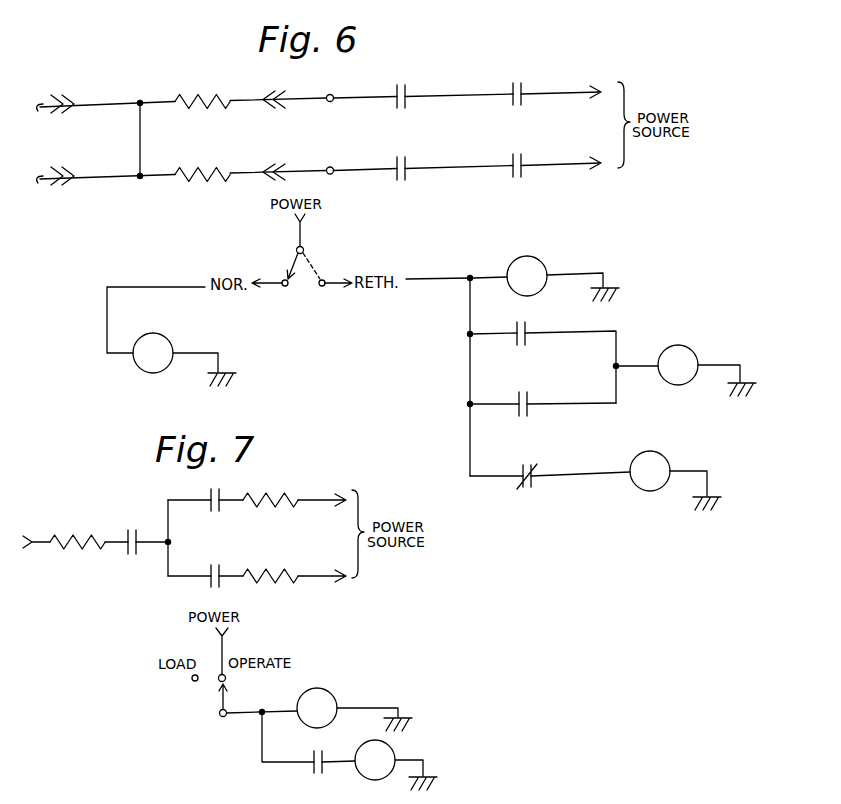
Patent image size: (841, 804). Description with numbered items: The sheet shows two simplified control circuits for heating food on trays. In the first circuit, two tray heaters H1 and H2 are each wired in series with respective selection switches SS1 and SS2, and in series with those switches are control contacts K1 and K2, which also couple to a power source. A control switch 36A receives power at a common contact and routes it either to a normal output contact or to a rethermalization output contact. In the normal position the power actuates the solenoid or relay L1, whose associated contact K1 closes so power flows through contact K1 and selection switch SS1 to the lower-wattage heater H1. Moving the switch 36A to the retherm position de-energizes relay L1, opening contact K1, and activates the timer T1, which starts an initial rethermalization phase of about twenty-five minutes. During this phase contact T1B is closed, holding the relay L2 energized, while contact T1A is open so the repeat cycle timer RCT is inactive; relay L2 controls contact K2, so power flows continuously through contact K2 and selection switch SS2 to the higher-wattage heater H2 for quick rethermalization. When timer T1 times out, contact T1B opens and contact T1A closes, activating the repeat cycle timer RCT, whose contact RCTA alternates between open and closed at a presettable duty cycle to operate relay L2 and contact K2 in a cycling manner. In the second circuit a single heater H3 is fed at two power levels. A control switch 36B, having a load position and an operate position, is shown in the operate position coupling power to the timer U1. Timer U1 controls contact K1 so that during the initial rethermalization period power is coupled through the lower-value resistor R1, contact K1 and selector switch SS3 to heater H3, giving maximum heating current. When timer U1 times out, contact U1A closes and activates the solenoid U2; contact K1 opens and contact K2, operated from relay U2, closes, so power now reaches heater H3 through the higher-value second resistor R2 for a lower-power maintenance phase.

In FIG. 6, the control switch 36A is at (319, 257).
In FIG. 7, the control switch 36B is at (236, 697).
In FIG. 6, the tray heater H1 is at (202, 92).
In FIG. 6, the tray heater H2 is at (202, 166).
In FIG. 7, the heater H3 is at (77, 529).
In FIG. 6, the selection switch SS1 is at (405, 86).
In FIG. 6, the selection switch SS2 is at (403, 158).
In FIG. 7, the selector switch SS3 is at (132, 532).
In FIG. 6, the control contact K1 is at (517, 83).
In FIG. 7, the control contact K1 is at (214, 491).
In FIG. 6, the control contact K2 is at (516, 155).
In FIG. 7, the control contact K2 is at (214, 567).
In FIG. 7, the resistor R1 is at (270, 488).
In FIG. 7, the second resistor R2 is at (270, 564).
In FIG. 6, the solenoid or relay L1 is at (153, 353).
In FIG. 6, the solenoid or relay L2 is at (678, 365).
In FIG. 6, the timer T1 is at (527, 276).
In FIG. 6, the contact T1A is at (524, 466).
In FIG. 6, the contact T1B is at (521, 325).
In FIG. 6, the repeat cycle timer RCT is at (650, 471).
In FIG. 6, the contact RCTA is at (521, 395).
In FIG. 7, the timer U1 is at (317, 708).
In FIG. 7, the contact U1A is at (321, 753).
In FIG. 7, the solenoid U2 is at (375, 760).